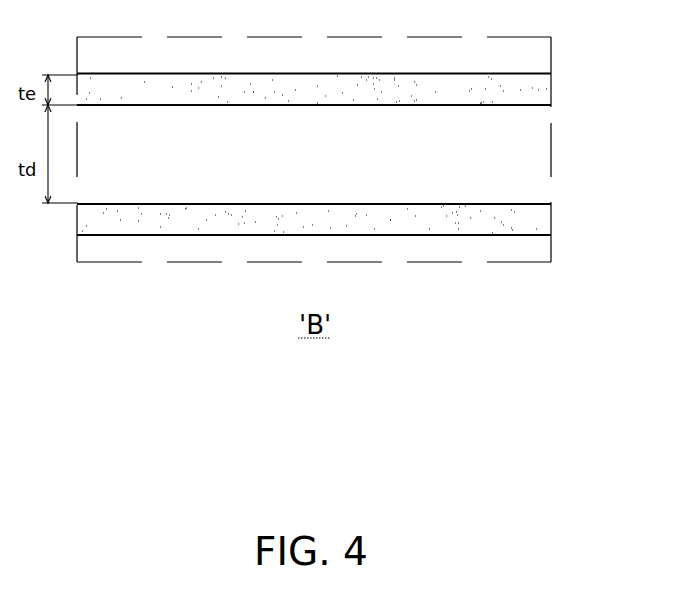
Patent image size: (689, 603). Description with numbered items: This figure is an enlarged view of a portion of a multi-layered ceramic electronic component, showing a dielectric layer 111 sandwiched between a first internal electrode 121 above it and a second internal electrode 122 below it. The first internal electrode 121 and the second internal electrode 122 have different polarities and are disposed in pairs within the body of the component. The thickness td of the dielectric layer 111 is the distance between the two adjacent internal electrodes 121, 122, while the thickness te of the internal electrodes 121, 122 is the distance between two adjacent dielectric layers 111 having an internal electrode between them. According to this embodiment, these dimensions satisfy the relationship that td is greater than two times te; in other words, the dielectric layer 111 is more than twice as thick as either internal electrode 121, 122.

The dielectric layer 111 is at (541, 152).
The first internal electrode 121 is at (545, 90).
The second internal electrode 122 is at (543, 212).